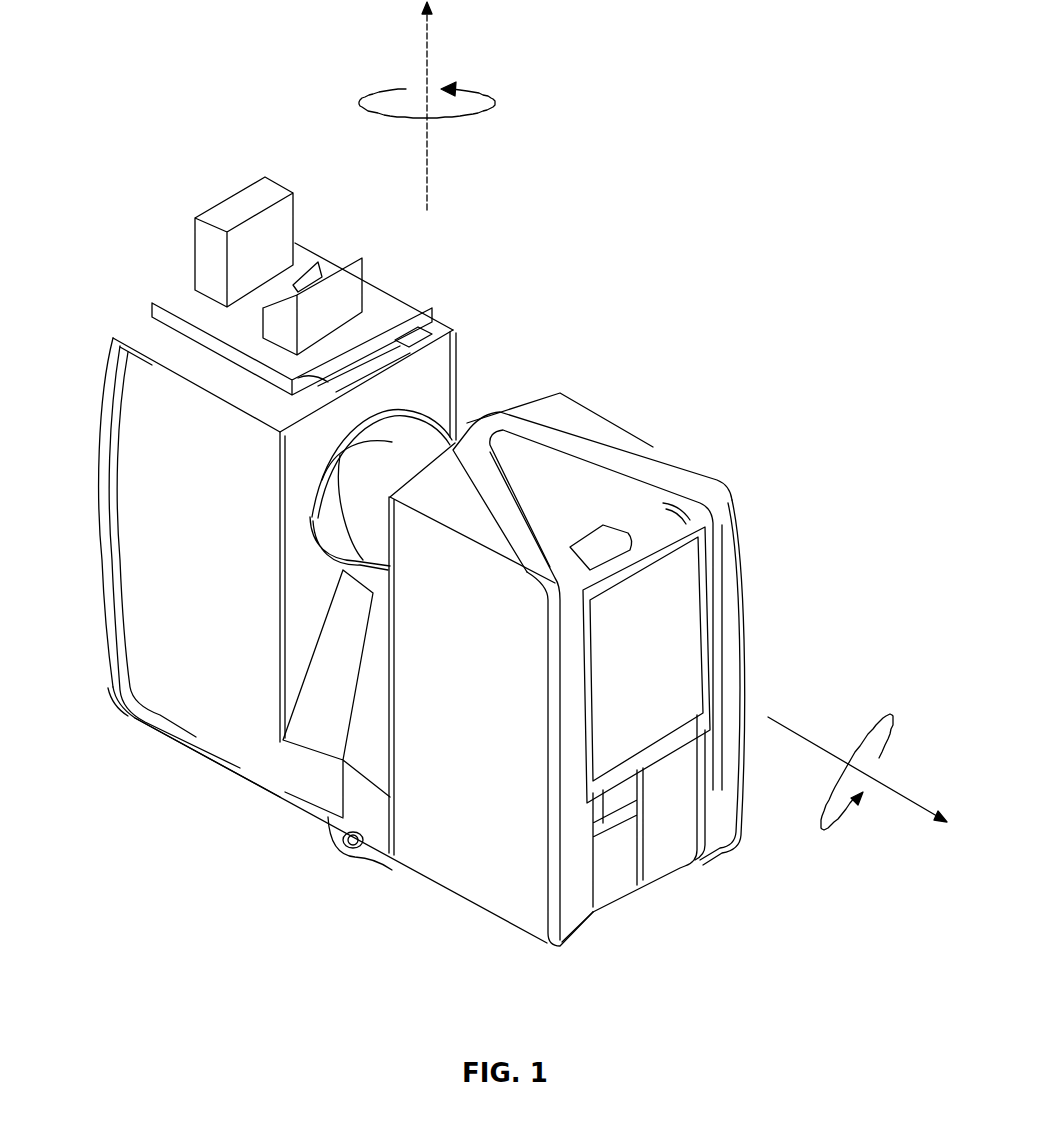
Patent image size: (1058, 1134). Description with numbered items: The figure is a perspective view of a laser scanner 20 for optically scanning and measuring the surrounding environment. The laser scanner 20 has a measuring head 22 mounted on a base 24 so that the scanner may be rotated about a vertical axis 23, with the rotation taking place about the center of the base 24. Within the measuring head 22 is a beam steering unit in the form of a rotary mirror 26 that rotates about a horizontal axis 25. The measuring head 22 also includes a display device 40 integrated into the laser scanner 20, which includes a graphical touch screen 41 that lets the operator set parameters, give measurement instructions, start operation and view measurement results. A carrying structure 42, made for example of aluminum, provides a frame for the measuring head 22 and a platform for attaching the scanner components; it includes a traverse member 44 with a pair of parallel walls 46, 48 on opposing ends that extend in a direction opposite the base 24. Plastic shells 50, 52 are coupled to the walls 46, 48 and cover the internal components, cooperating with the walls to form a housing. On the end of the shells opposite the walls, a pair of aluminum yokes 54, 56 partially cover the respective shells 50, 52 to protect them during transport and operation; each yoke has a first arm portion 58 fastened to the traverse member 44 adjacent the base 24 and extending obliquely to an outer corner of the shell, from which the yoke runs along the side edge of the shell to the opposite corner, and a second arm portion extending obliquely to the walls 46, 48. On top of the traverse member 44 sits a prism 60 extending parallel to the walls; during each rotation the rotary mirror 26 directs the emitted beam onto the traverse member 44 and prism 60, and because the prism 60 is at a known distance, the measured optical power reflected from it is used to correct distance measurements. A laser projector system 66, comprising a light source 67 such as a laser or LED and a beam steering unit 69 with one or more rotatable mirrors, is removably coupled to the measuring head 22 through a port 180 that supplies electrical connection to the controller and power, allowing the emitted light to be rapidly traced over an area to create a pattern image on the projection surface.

The laser scanner 20 is at (140, 97).
The measuring head 22 is at (710, 335).
The vertical axis 23 is at (426, 46).
The base 24 is at (344, 848).
The horizontal axis 25 is at (910, 800).
The rotary mirror 26 is at (390, 443).
The display device 40 is at (773, 643).
The graphical touch screen 41 is at (670, 628).
The carrying structure 42 is at (208, 843).
The traverse member 44 is at (363, 834).
The wall 46 is at (557, 392).
The wall 48 is at (436, 355).
The shell 50 is at (140, 524).
The shell 52 is at (532, 883).
The yoke 54 is at (688, 472).
The yoke 56 is at (152, 334).
The first arm portion 58 is at (113, 694).
The prism 60 is at (388, 628).
The laser projector system 66 is at (258, 225).
The light source 67 is at (230, 196).
The beam steering unit 69 is at (343, 262).
The port 180 is at (418, 318).